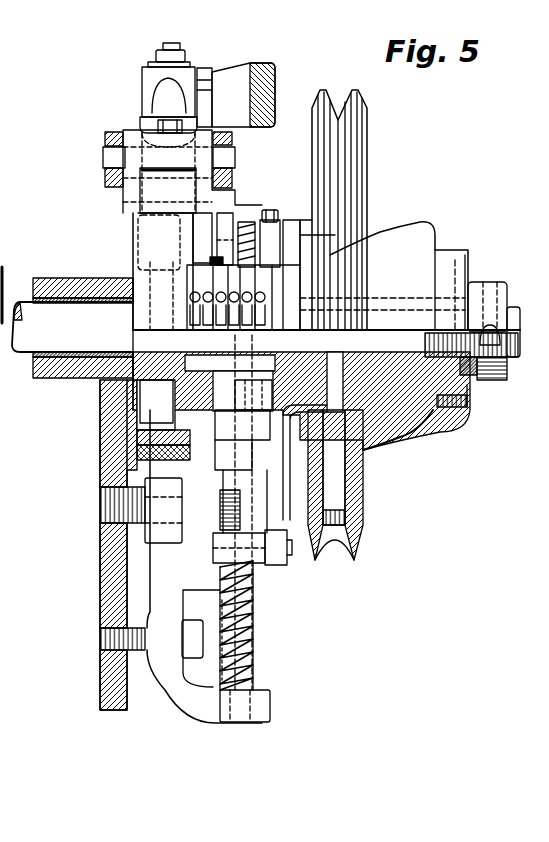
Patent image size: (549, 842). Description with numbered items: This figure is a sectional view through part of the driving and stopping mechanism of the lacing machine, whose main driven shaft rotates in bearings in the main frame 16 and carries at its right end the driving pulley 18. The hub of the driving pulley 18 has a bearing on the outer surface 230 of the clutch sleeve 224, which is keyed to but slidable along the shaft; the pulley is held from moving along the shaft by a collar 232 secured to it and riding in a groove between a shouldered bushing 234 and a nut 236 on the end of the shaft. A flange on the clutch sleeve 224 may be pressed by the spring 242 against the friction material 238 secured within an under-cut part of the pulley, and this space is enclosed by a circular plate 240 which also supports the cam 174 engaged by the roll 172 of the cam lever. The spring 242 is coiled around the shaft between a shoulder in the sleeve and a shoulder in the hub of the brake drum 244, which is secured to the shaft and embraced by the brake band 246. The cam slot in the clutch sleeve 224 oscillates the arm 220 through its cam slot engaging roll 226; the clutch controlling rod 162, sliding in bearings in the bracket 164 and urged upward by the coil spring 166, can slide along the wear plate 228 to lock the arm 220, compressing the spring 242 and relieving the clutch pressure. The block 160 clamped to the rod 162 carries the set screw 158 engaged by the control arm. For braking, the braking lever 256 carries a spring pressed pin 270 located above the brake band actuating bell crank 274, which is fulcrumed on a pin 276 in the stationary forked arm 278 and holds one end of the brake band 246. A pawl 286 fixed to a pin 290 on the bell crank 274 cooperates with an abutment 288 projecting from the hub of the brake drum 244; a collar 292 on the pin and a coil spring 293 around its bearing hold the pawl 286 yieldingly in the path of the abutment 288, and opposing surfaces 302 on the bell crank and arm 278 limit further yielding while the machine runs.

The main frame 16 is at (100, 548).
The driving pulley 18 is at (358, 156).
The set screw 158 is at (213, 526).
The block 160 is at (255, 565).
The clutch controlling rod 162 is at (255, 626).
The coil spring 166 is at (255, 646).
The bracket 164 is at (270, 696).
The roll 172 is at (290, 570).
The cam 174 is at (292, 220).
The arm 220 is at (236, 426).
The clutch sleeve 224 is at (440, 410).
The cam slot engaging roll 226 is at (210, 412).
The wear plate 228 is at (215, 461).
The outer surface 230 is at (415, 441).
The collar 232 is at (473, 278).
The shouldered bushing 234 is at (470, 379).
The nut 236 is at (500, 379).
The friction material 238 is at (363, 500).
The circular plate 240 is at (290, 548).
The spring 242 is at (252, 352).
The brake drum 244 is at (137, 438).
The brake band 246 is at (147, 188).
The braking lever 256 is at (275, 75).
The spring pressed pin 270 is at (178, 44).
The brake band actuating bell crank 274 is at (140, 215).
The pin 276 is at (103, 160).
The forked arm 278 is at (105, 141).
The pawl 286 is at (232, 215).
The abutment 288 is at (150, 241).
The pin 290 is at (365, 224).
The collar 292 is at (352, 256).
The coil spring 293 is at (243, 222).
The opposing surfaces 302 is at (203, 67).